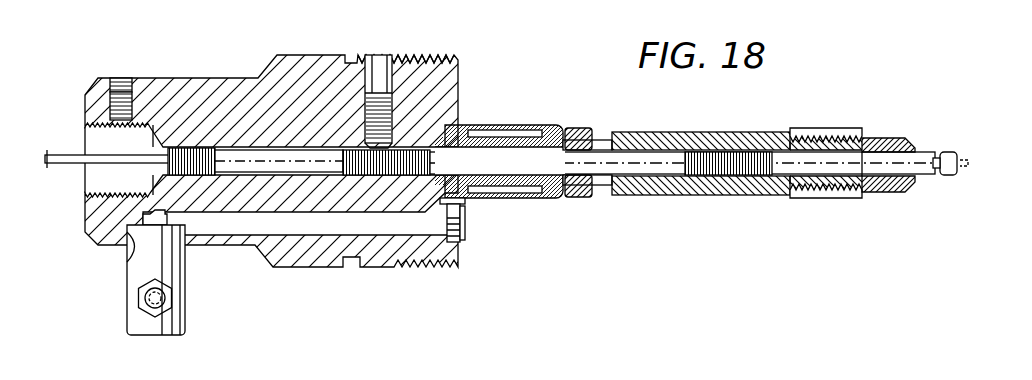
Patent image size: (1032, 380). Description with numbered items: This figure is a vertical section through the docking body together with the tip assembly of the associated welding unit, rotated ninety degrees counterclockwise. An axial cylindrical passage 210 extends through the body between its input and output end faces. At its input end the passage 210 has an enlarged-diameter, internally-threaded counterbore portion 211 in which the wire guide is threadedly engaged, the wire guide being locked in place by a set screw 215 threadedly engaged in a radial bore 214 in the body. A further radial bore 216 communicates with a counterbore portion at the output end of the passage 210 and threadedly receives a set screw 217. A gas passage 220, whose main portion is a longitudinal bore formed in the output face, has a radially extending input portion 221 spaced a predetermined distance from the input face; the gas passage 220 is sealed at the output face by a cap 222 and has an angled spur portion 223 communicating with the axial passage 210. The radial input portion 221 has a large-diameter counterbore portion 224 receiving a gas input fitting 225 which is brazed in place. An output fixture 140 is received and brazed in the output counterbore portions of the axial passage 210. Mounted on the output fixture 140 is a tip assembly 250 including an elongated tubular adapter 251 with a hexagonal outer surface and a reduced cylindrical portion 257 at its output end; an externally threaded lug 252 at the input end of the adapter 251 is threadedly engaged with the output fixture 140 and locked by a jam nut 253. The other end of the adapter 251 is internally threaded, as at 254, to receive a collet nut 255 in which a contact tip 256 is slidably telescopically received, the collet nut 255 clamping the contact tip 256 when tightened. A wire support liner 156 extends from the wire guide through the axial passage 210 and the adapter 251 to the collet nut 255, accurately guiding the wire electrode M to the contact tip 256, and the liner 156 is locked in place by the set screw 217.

The output fixture 140 is at (503, 121).
The wire support liner 156 is at (752, 152).
The axial cylindrical passage 210 is at (233, 150).
The counterbore portion 211 is at (102, 192).
The radial bore 214 is at (121, 92).
The set screw 215 is at (121, 78).
The radial bore 216 is at (378, 95).
The set screw 217 is at (391, 105).
The gas passage 220 is at (320, 225).
The radial input portion 221 is at (143, 215).
The cap 222 is at (465, 212).
The angled spur portion 223 is at (457, 203).
The counterbore portion 224 is at (140, 238).
The gas input fitting 225 is at (132, 318).
The tip assembly 250 is at (694, 120).
The tubular adapter 251 is at (688, 196).
The externally threaded lug 252 is at (586, 142).
The jam nut 253 is at (585, 196).
The internal threads 254 is at (828, 190).
The collet nut 255 is at (916, 102).
The contact tip 256 is at (925, 178).
The reduced cylindrical portion 257 is at (825, 137).
The wire electrode M is at (74, 128).